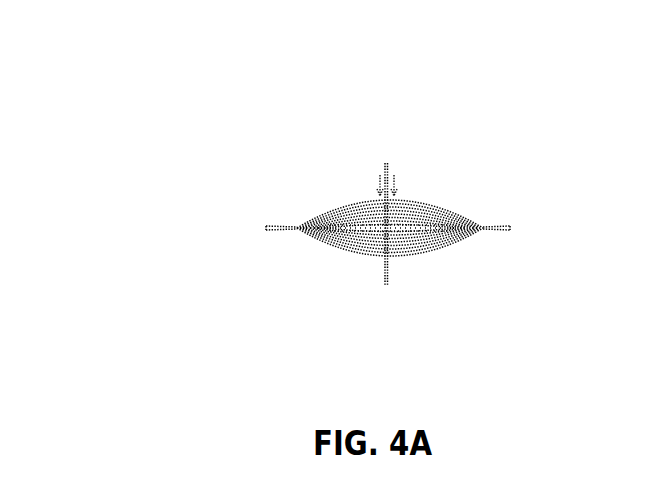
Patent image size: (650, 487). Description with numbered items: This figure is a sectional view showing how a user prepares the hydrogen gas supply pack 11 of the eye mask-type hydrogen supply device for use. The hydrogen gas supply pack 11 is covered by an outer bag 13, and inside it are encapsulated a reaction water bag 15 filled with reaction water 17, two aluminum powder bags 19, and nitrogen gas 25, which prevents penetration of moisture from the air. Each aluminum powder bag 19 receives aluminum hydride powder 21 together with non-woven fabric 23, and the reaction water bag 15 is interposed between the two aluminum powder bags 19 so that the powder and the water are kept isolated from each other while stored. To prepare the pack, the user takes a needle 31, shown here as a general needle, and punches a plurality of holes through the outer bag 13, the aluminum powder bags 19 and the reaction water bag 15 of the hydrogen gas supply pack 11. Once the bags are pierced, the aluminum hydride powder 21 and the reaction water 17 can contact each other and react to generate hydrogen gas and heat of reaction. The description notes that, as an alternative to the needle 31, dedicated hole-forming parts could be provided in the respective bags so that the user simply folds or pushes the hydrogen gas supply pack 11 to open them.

The hydrogen gas supply pack 11 is at (301, 113).
The outer bag 13 is at (276, 240).
The reaction water bag 15 is at (470, 219).
The reaction water 17 is at (318, 250).
The aluminum powder bag 19 is at (296, 214).
The aluminum hydride powder 21 is at (405, 193).
The non-woven fabric 23 is at (346, 205).
The nitrogen gas 25 is at (481, 232).
The needle 31 is at (388, 163).